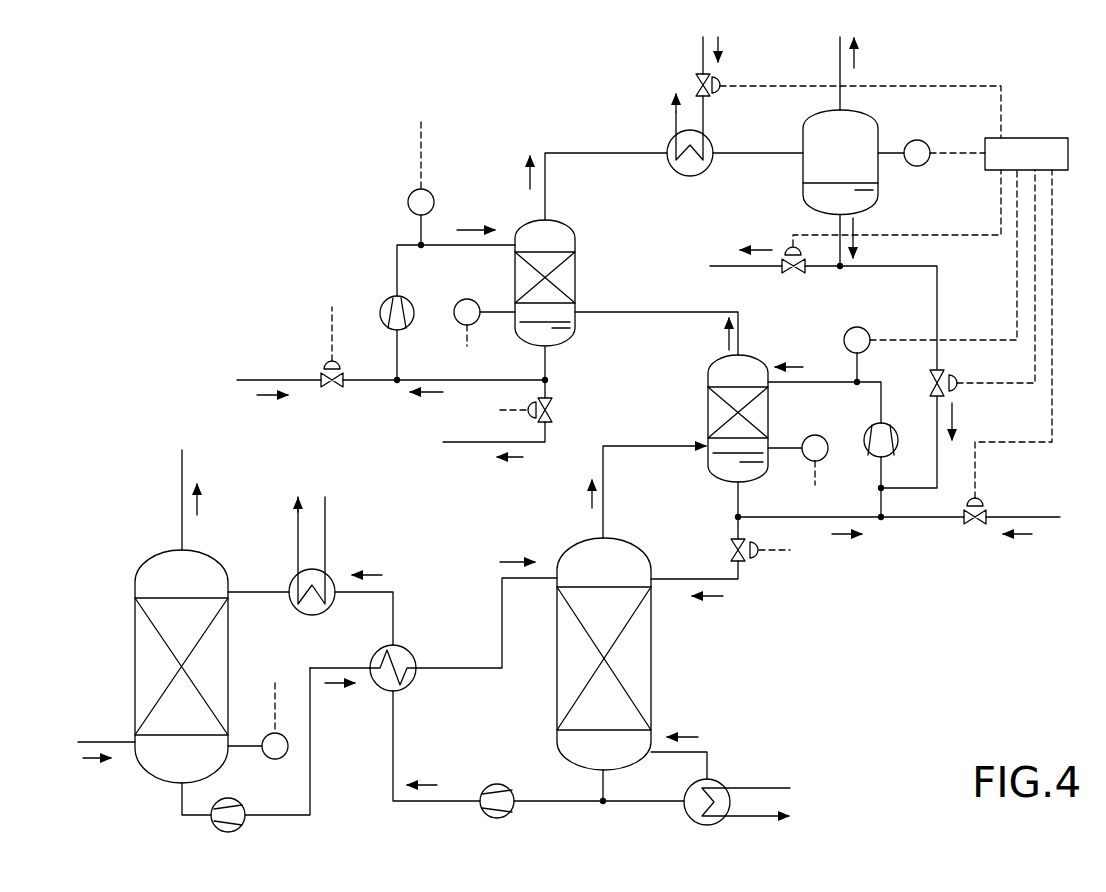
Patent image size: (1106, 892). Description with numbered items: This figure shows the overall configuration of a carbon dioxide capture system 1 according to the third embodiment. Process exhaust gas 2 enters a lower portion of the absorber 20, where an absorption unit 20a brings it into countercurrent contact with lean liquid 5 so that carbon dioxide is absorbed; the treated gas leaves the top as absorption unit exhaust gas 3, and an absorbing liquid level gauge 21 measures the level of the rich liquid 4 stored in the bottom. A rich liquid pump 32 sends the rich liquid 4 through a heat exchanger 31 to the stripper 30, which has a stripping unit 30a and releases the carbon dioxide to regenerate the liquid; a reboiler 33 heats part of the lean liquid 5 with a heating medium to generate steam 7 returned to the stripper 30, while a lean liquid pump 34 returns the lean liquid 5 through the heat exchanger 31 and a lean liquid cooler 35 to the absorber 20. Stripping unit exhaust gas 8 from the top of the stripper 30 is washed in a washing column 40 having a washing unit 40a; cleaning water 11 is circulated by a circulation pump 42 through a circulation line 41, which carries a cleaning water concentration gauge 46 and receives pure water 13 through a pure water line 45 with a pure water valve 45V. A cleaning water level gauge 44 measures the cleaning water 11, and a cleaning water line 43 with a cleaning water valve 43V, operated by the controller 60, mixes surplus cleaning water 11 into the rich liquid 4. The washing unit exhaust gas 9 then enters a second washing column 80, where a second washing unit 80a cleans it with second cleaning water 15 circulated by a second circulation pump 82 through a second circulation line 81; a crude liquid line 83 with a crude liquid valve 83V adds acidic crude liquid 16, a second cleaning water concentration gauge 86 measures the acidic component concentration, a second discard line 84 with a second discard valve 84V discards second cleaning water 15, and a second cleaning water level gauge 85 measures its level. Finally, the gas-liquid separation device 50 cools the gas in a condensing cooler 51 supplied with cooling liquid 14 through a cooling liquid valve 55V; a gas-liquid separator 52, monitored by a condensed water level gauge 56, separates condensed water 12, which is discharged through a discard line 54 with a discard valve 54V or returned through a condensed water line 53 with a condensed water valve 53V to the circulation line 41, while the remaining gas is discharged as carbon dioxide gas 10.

The carbon dioxide capture system 1 is at (202, 200).
The process exhaust gas 2 is at (92, 764).
The absorption unit exhaust gas 3 is at (197, 500).
The rich liquid 4 is at (337, 690).
The lean liquid 5 is at (375, 570).
The steam 7 is at (690, 732).
The stripping unit exhaust gas 8 is at (586, 497).
The washing unit exhaust gas 9 is at (525, 181).
The carbon dioxide gas 10 is at (858, 58).
The cleaning water 11 is at (715, 603).
The condensed water 12 is at (762, 248).
The pure water 13 is at (1025, 540).
The cooling liquid 14 is at (722, 46).
The second cleaning water 15 is at (470, 225).
The crude liquid 16 is at (267, 403).
The absorber 20 is at (137, 666).
The absorption unit 20a is at (143, 687).
The absorbing liquid level gauge 21 is at (289, 749).
The stripper 30 is at (620, 669).
The stripping unit 30a is at (557, 670).
The heat exchanger 31 is at (407, 643).
The rich liquid pump 32 is at (245, 797).
The reboiler 33 is at (722, 781).
The lean liquid pump 34 is at (500, 783).
The lean liquid cooler 35 is at (323, 613).
The washing column 40 is at (718, 418).
The washing unit 40a is at (758, 410).
The circulation line 41 is at (818, 377).
The circulation pump 42 is at (897, 433).
The cleaning water line 43 is at (691, 577).
The cleaning water valve 43V is at (752, 560).
The cleaning water level gauge 44 is at (826, 434).
The pure water line 45 is at (920, 520).
The pure water valve 45V is at (984, 498).
The cleaning water concentration gauge 46 is at (866, 328).
The gas-liquid separation device 50 is at (620, 100).
The condensing cooler 51 is at (672, 172).
The gas-liquid separator 52 is at (802, 131).
The condensed water line 53 is at (938, 295).
The condensed water valve 53V is at (933, 388).
The discard line 54 is at (822, 272).
The discard valve 54V is at (790, 245).
The cooling liquid valve 55V is at (698, 76).
The condensed water level gauge 56 is at (927, 163).
The controller 60 is at (1043, 138).
The second washing column 80 is at (626, 287).
The second washing unit 80a is at (565, 278).
The second circulation line 81 is at (396, 272).
The second circulation pump 82 is at (381, 308).
The crude liquid line 83 is at (368, 383).
The crude liquid valve 83V is at (325, 366).
The second discard line 84 is at (468, 446).
The second discard valve 84V is at (551, 407).
The second cleaning water level gauge 85 is at (456, 302).
The second cleaning water concentration gauge 86 is at (408, 202).